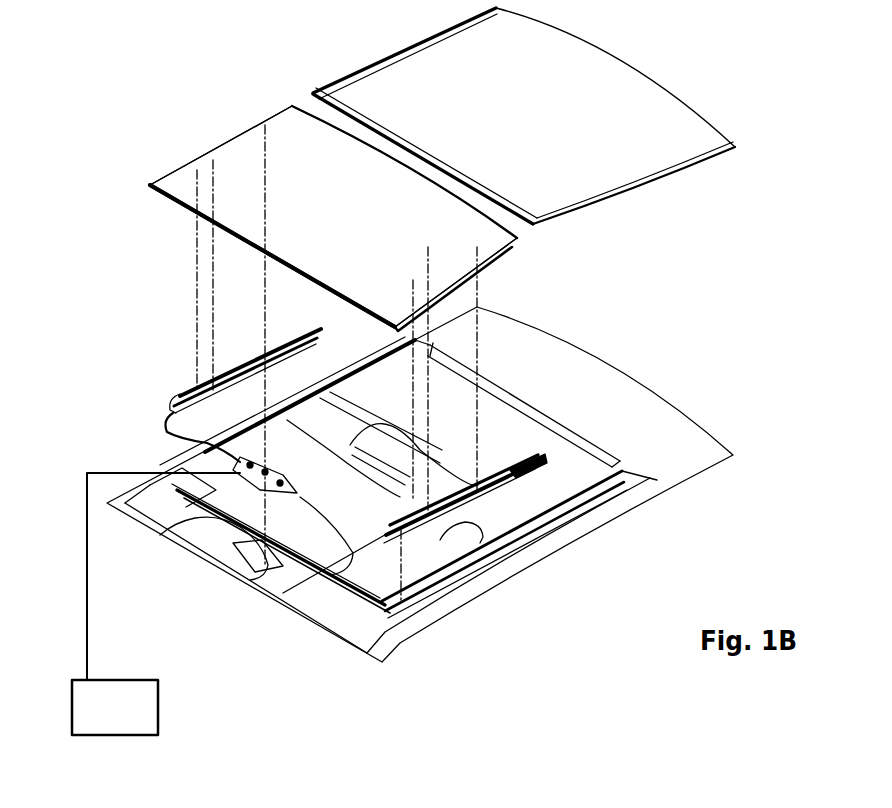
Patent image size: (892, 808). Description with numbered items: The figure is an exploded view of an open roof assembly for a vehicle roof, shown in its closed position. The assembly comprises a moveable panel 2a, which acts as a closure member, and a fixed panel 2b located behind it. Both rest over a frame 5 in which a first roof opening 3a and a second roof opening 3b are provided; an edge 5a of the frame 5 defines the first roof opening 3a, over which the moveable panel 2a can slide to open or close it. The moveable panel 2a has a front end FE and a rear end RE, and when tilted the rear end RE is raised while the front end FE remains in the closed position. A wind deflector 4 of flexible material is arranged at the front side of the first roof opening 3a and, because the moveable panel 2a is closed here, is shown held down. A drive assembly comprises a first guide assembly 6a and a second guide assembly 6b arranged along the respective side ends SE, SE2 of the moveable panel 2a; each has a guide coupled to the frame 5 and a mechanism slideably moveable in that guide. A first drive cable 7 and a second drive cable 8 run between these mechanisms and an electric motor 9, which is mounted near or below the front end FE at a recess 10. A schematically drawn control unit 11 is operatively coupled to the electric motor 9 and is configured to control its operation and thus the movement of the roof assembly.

The moveable panel 2a is at (355, 223).
The fixed panel 2b is at (547, 128).
The first roof opening 3a is at (344, 489).
The second roof opening 3b is at (522, 444).
The wind deflector 4 is at (168, 507).
The frame 5 is at (465, 591).
The edge 5a is at (477, 545).
The first guide assembly 6a is at (482, 501).
The second guide assembly 6b is at (174, 372).
The first drive cable 7 is at (283, 593).
The second drive cable 8 is at (170, 417).
The electric motor 9 is at (160, 535).
The recess 10 is at (236, 568).
The control unit 11 is at (126, 720).
The side end SE is at (226, 143).
The side end SE2 is at (461, 260).
The rear end RE is at (346, 136).
The front end FE is at (243, 257).